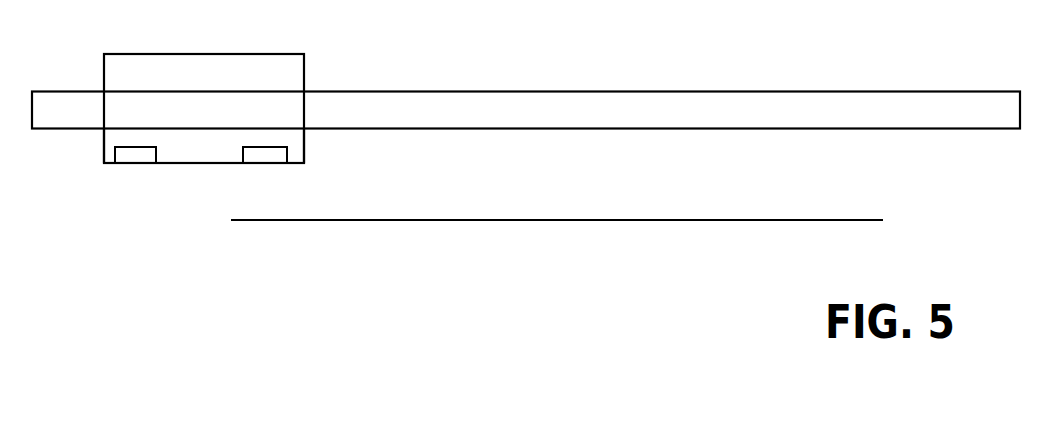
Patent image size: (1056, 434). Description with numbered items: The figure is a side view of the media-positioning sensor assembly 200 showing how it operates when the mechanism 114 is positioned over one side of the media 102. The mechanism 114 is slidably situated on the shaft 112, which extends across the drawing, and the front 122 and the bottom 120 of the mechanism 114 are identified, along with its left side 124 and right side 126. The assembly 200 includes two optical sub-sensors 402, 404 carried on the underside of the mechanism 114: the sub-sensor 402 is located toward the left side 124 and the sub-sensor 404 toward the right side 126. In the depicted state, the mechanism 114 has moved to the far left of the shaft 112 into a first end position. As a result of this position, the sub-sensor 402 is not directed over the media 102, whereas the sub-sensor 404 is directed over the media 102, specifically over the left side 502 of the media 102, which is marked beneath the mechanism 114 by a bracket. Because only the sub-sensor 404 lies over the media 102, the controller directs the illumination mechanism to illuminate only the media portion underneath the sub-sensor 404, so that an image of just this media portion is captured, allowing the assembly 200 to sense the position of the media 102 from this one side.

The media 102 is at (677, 223).
The shaft 112 is at (62, 97).
The mechanism 114 is at (283, 71).
The bottom 120 is at (183, 163).
The front 122 is at (152, 84).
The left side 124 is at (104, 146).
The right side 126 is at (304, 155).
The media-positioning sensor assembly 200 is at (135, 237).
The optical sub-sensor 402 is at (132, 158).
The optical sub-sensor 404 is at (263, 159).
The left side of the media 502 is at (337, 236).